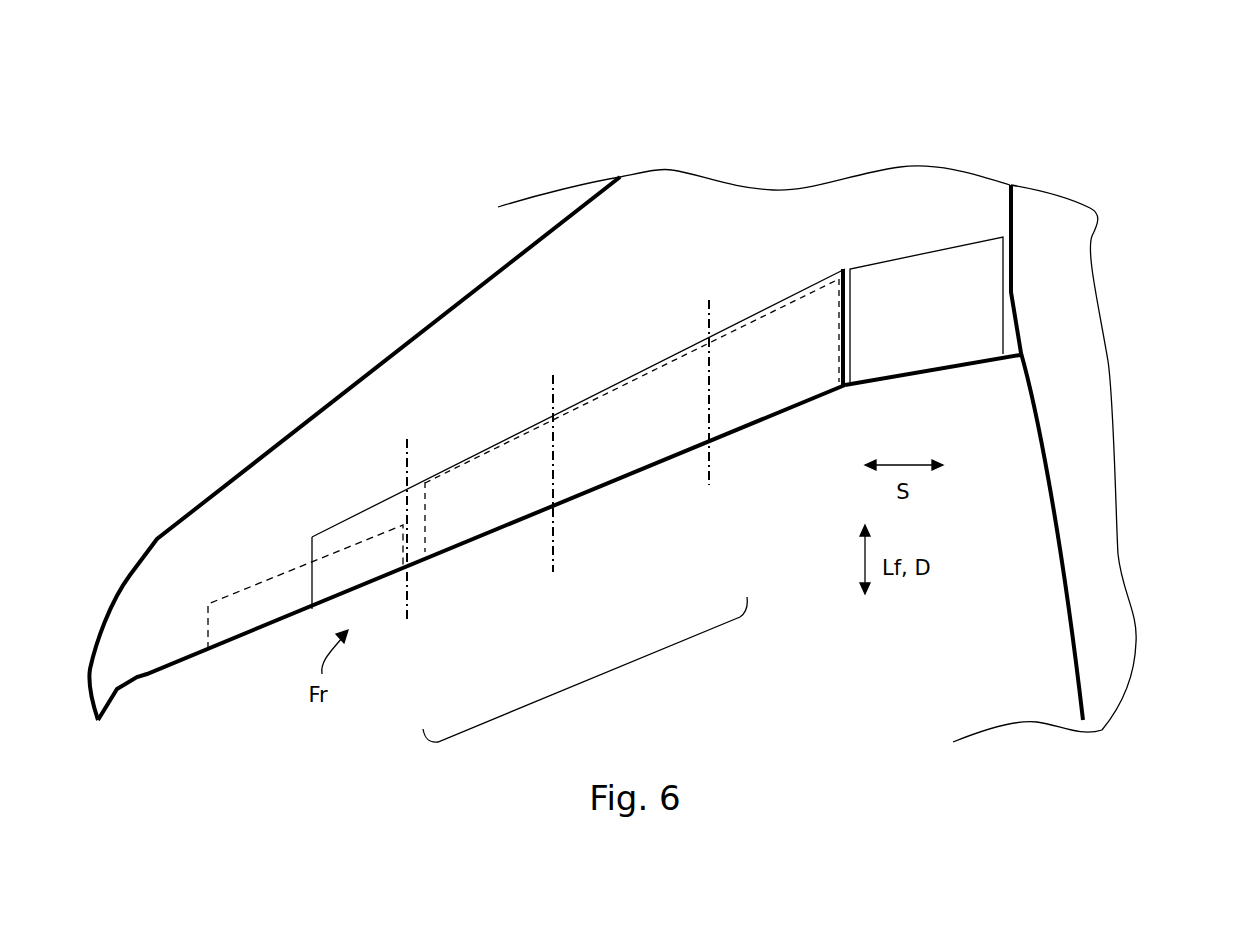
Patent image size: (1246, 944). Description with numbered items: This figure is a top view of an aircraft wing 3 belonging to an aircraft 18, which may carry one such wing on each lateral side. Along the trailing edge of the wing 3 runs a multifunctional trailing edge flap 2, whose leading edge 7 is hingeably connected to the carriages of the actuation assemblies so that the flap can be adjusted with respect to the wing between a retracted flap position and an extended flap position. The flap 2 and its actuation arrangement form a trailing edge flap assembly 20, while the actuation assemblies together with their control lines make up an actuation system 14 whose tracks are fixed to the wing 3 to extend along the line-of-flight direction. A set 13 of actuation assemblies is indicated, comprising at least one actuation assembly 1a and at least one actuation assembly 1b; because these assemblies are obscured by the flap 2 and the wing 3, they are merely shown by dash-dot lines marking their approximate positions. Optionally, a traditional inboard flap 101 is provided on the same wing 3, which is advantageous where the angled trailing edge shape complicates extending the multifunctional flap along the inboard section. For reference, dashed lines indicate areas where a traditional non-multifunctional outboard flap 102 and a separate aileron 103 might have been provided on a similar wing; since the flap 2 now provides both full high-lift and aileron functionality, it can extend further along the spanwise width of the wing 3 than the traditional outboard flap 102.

The actuation system 14 is at (775, 149).
The aircraft 18 is at (1170, 135).
The inboard flap 101 is at (940, 260).
The aircraft wing 3 is at (422, 377).
The leading edge 7 is at (378, 498).
The trailing edge flap 2 is at (355, 522).
The aileron 103 is at (267, 582).
The outboard flap 102 is at (428, 513).
The actuation assembly 1a is at (410, 634).
The actuation assembly 1b is at (554, 570).
The set of actuation assemblies 13 is at (585, 669).
The trailing edge flap assembly 20 is at (753, 673).